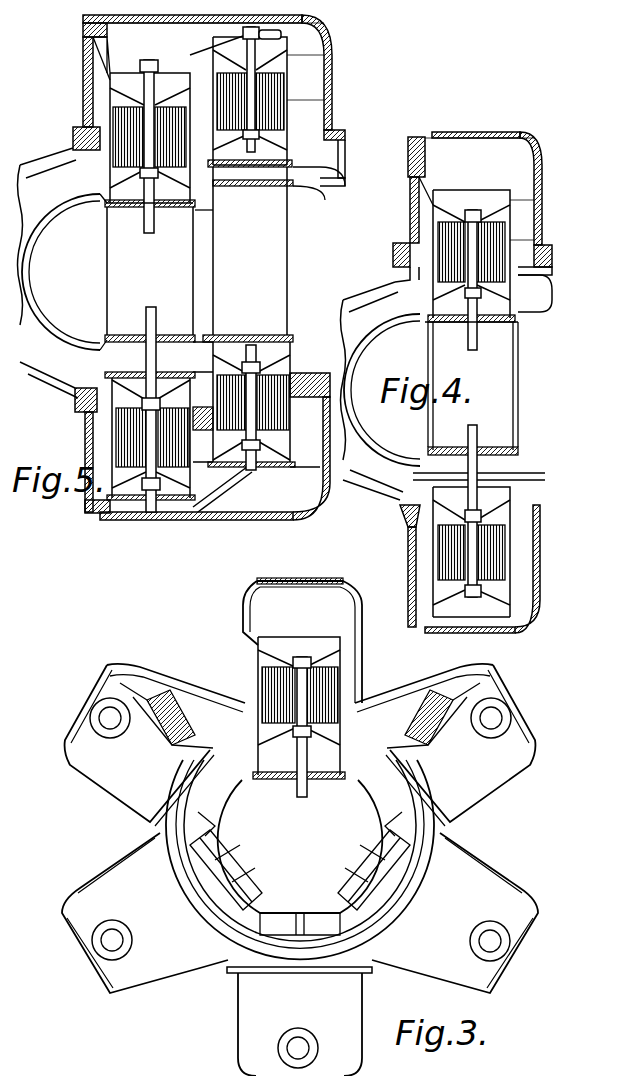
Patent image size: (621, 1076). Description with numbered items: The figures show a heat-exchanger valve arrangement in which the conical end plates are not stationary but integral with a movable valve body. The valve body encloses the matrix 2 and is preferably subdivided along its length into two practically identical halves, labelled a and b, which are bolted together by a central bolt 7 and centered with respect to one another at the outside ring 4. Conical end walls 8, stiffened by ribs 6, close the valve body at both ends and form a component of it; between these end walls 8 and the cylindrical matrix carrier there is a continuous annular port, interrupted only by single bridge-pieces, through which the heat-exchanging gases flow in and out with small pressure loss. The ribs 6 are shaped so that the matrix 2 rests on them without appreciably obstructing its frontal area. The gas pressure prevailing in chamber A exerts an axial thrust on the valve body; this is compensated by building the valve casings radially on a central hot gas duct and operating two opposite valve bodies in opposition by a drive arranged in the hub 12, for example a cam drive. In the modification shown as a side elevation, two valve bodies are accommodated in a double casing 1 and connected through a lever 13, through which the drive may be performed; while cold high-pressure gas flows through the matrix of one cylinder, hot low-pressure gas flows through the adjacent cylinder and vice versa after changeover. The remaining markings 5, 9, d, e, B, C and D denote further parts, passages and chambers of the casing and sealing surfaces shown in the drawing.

In FIG. 5, the double casing 1 is at (86, 88).
In FIG. 4, the double casing 1 is at (467, 382).
In FIG. 3, the double casing 1 is at (132, 672).
In FIG. 3, the matrix 2 is at (178, 705).
In FIG. 5, the outside ring 4 is at (128, 42).
In FIG. 4, the outside ring 4 is at (436, 205).
In FIG. 3, the outside ring 4 is at (270, 778).
In FIG. 5, the spokes / struts 5 is at (140, 110).
In FIG. 4, the spokes / struts 5 is at (470, 230).
In FIG. 3, the spokes / struts 5 is at (300, 680).
In FIG. 5, the ribs 6 is at (118, 104).
In FIG. 4, the ribs 6 is at (440, 215).
In FIG. 3, the ribs 6 is at (280, 665).
In FIG. 5, the central bolt 7 is at (150, 240).
In FIG. 4, the central bolt 7 is at (472, 425).
In FIG. 3, the central bolt 7 is at (310, 660).
In FIG. 3, the end walls 8 is at (326, 660).
In FIG. 3, the nut 9 is at (319, 784).
In FIG. 5, the hub 12 is at (195, 200).
In FIG. 4, the hub 12 is at (490, 326).
In FIG. 3, the hub 12 is at (338, 779).
In FIG. 5, the lever 13 is at (178, 47).
In FIG. 5, the opening a is at (109, 52).
In FIG. 4, the opening a is at (425, 158).
In FIG. 3, the opening a is at (300, 852).
In FIG. 5, the opening b is at (303, 98).
In FIG. 4, the opening b is at (544, 208).
In FIG. 3, the opening b is at (288, 749).
In FIG. 5, the chamber d is at (94, 365).
In FIG. 4, the chamber d is at (370, 302).
In FIG. 3, the chamber d is at (212, 808).
In FIG. 5, the opening e is at (130, 190).
In FIG. 4, the opening e is at (455, 300).
In FIG. 5, the chamber A is at (300, 40).
In FIG. 4, the chamber A is at (512, 175).
In FIG. 3, the chamber A is at (352, 605).
In FIG. 5, the chamber B is at (300, 100).
In FIG. 4, the chamber B is at (512, 218).
In FIG. 3, the chamber B is at (355, 648).
In FIG. 5, the chamber C is at (310, 142).
In FIG. 4, the chamber C is at (528, 256).
In FIG. 3, the chamber C is at (355, 705).
In FIG. 5, the chamber D is at (312, 178).
In FIG. 4, the chamber D is at (530, 300).
In FIG. 3, the chamber D is at (350, 745).